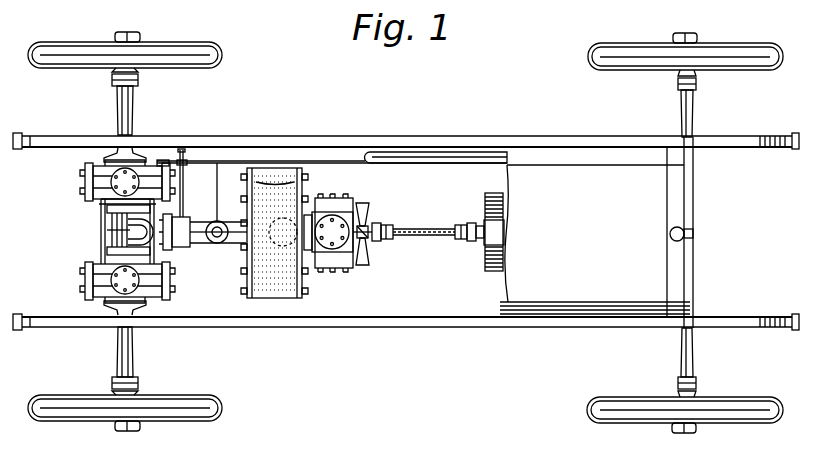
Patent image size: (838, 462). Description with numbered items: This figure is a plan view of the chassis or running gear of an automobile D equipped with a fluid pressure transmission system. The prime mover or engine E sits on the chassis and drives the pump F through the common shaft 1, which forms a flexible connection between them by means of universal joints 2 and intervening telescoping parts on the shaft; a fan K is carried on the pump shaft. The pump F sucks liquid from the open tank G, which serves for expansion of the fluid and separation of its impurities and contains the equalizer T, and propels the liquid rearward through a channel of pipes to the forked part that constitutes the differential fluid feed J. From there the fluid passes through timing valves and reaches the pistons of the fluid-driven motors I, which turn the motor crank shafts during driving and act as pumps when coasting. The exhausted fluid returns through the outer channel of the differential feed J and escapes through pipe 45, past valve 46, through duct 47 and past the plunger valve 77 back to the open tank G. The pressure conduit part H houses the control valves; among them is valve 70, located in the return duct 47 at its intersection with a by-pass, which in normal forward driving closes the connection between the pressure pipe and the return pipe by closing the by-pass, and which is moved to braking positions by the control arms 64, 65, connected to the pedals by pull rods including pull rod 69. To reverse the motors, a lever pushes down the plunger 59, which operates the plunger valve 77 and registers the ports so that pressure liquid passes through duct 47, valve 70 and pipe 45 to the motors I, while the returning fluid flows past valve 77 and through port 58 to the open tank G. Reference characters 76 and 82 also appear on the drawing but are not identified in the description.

The propeller shaft 1 is at (441, 237).
The universal joints 2 is at (394, 229).
The elbow pipe 45 is at (152, 236).
The valve casing 46 is at (184, 230).
The shaft 47 is at (197, 244).
The gear wheel 58 is at (228, 228).
The shaft 59 is at (231, 244).
The post 64 is at (195, 162).
The bracket 65 is at (165, 160).
The rod 69 is at (238, 162).
The rod 70 is at (185, 179).
The cross bar 76 is at (103, 207).
The rod 77 is at (219, 221).
The radiator pipe 82 is at (284, 207).
The side bar D is at (428, 147).
The body E is at (596, 232).
The engine F is at (354, 207).
The radiator G is at (274, 233).
The shaft H is at (198, 246).
The cylinders I is at (85, 185).
The crank case J is at (120, 232).
The fan K is at (370, 262).
The tank T is at (283, 232).